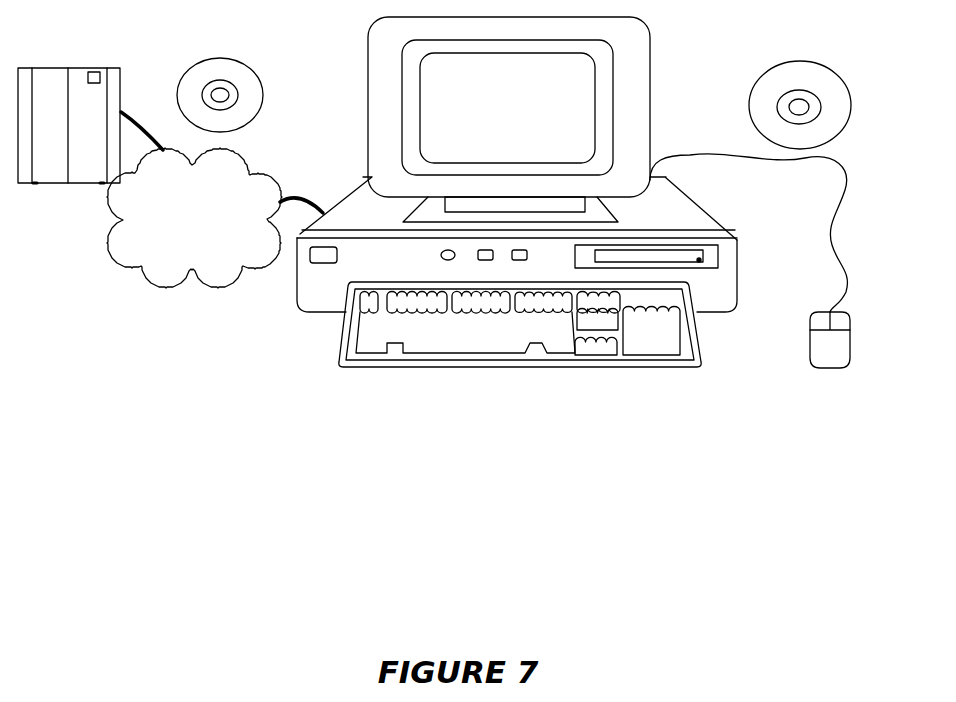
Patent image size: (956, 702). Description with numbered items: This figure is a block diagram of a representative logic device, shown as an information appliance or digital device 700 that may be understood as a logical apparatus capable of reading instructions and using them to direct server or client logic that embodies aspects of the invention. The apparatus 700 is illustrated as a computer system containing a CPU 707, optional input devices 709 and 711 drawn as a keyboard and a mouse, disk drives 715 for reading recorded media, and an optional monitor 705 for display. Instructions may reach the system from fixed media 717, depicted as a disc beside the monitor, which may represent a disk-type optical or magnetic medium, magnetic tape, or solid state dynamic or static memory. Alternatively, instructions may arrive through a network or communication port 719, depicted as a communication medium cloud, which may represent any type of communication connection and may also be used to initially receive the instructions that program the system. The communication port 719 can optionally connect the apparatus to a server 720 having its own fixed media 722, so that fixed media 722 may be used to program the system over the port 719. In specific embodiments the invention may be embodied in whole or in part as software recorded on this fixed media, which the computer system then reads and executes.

The information appliance 700 is at (712, 30).
The monitor 705 is at (570, 90).
The CPU 707 is at (692, 210).
The input device 709 is at (417, 370).
The input device 711 is at (852, 334).
The disk drive 715 is at (718, 257).
The fixed media 717 is at (840, 72).
The communication port 719 is at (283, 197).
The server 720 is at (100, 68).
The fixed media 722 is at (250, 65).